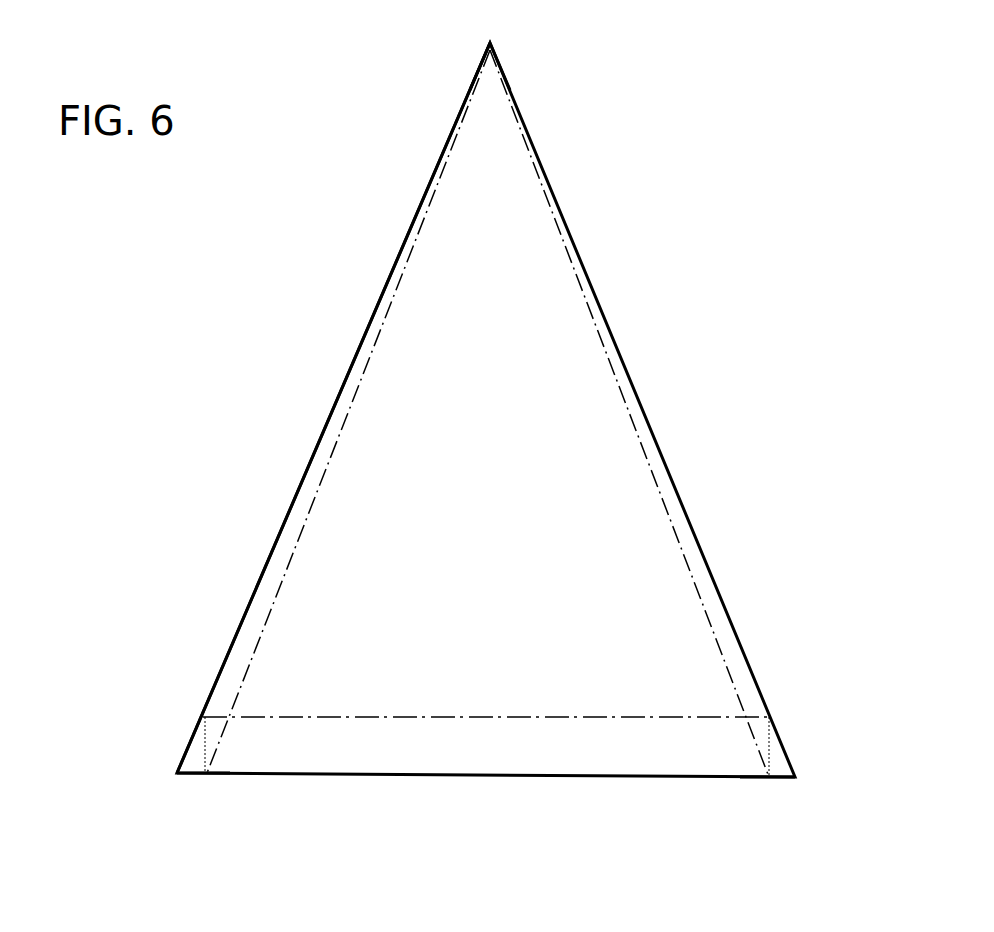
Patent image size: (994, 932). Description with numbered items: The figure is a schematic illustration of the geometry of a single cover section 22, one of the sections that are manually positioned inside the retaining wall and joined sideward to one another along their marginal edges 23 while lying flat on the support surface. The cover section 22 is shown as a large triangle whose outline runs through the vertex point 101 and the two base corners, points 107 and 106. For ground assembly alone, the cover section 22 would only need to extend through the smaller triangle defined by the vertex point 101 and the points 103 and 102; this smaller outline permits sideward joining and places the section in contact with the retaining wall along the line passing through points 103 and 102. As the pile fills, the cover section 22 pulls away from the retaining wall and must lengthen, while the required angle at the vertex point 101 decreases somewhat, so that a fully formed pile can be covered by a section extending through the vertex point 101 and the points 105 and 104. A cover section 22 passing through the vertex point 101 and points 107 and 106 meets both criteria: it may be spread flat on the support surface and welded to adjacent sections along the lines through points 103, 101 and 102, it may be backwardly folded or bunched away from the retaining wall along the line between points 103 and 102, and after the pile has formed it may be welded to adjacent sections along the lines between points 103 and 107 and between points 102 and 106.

The cover section 22 is at (705, 505).
The marginal edge 23 is at (298, 468).
The vertex point 101 is at (497, 35).
The point 102 is at (778, 717).
The point 103 is at (193, 710).
The point 104 is at (772, 785).
The point 105 is at (202, 778).
The point 106 is at (798, 783).
The point 107 is at (172, 774).